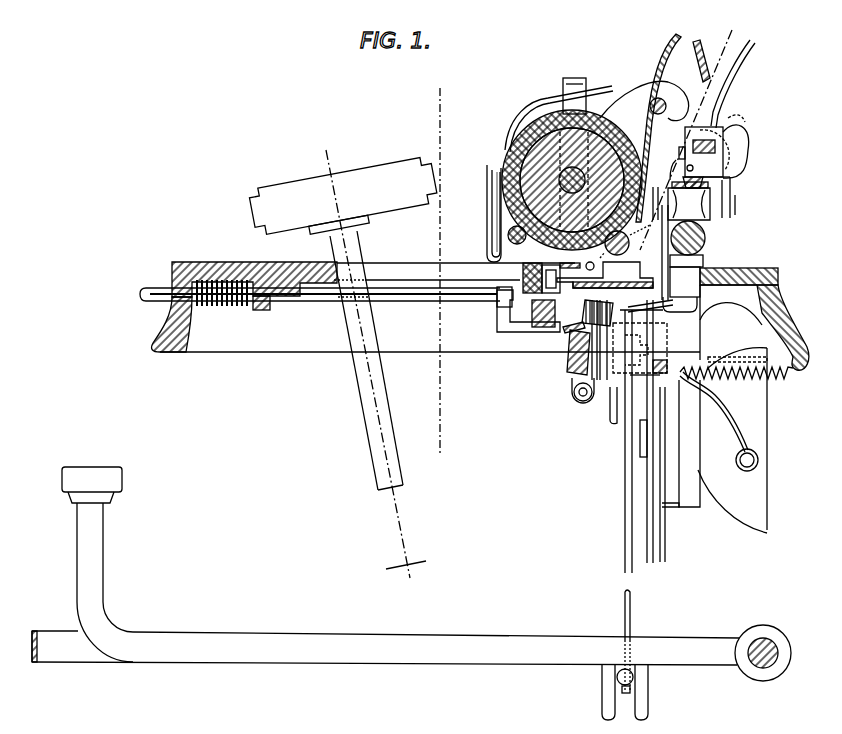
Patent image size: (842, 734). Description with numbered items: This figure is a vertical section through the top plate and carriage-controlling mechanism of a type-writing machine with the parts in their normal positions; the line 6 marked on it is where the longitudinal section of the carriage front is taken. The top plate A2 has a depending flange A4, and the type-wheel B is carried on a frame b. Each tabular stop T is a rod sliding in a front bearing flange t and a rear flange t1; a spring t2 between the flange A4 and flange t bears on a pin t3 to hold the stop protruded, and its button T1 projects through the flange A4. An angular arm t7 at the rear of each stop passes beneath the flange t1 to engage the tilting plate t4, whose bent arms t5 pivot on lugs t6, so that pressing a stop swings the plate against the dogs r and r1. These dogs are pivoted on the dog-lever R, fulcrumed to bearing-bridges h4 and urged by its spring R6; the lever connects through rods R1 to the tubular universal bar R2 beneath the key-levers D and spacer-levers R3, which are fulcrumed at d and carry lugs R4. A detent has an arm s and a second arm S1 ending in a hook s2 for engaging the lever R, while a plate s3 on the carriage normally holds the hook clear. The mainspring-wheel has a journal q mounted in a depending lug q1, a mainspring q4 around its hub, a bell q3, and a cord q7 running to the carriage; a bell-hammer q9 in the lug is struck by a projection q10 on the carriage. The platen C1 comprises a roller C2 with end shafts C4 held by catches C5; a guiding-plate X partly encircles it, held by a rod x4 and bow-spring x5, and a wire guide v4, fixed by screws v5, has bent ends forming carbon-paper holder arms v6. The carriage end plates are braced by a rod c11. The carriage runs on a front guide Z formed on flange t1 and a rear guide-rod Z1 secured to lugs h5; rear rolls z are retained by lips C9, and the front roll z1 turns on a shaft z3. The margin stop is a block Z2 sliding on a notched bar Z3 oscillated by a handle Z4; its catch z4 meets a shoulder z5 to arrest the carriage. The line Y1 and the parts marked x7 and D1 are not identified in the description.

The section line 6 is at (458, 108).
The top plate A2 is at (195, 266).
The depending flange A4 is at (160, 338).
The pin t3 is at (215, 280).
The spring t2 is at (228, 280).
The front bearing lug t is at (300, 285).
The handle or button T1 is at (156, 290).
The tabular stop T is at (395, 302).
The type-wheel B is at (344, 200).
The frame or carrier b is at (388, 448).
The roller C2 is at (540, 157).
The catch C5 is at (575, 78).
The paper-guide v4 is at (548, 100).
The platen C1 is at (525, 118).
The pins or shafts C4 is at (604, 100).
The strengthening rod or brace c11 is at (660, 96).
The guiding-plate X is at (658, 122).
The axis line Y1 is at (686, 130).
The operating-handle Z4 is at (737, 62).
The notched bar Z3 is at (722, 125).
The block Z2 is at (748, 128).
The bearing rolls z is at (680, 158).
The rod or bar x4 is at (670, 205).
The catch z4 is at (735, 200).
The shoulder z5 is at (720, 226).
The rear guide Z1 is at (710, 240).
The projection q10 is at (692, 300).
The lips C9 is at (740, 262).
The lugs h5 is at (745, 268).
The arm s is at (731, 322).
The bell-hammer q9 is at (702, 366).
The spring R6 is at (769, 385).
The arm S1 is at (705, 395).
The knob q3 is at (735, 459).
The hook s2 is at (670, 474).
The depending lug q1 is at (691, 443).
The mainspring q4 is at (676, 510).
The journal q is at (648, 500).
The rods R1 is at (625, 450).
The dog-lever R is at (613, 400).
The cord or chain q7 is at (632, 592).
The screws v5 is at (487, 172).
The vertical arms v6 is at (492, 212).
The front guide-roll z1 is at (505, 276).
The pin x7 is at (519, 242).
The rear bearing flange t1 is at (530, 298).
The front guide Z is at (542, 308).
The shaft z3 is at (545, 322).
The plate t4 is at (566, 336).
The spring x5 is at (625, 251).
The dog r is at (565, 350).
The plate s3 is at (603, 335).
The dog r1 is at (640, 342).
The arm t7 is at (548, 372).
The arms t5 is at (573, 392).
The bearing-bridges h4 is at (567, 397).
The lugs t6 is at (577, 406).
The key-levers D is at (385, 637).
The spacer-levers R3 is at (80, 656).
The pipe head D1 is at (80, 478).
The fulcrum d is at (768, 648).
The lugs R4 is at (602, 703).
The universal bar R2 is at (636, 684).